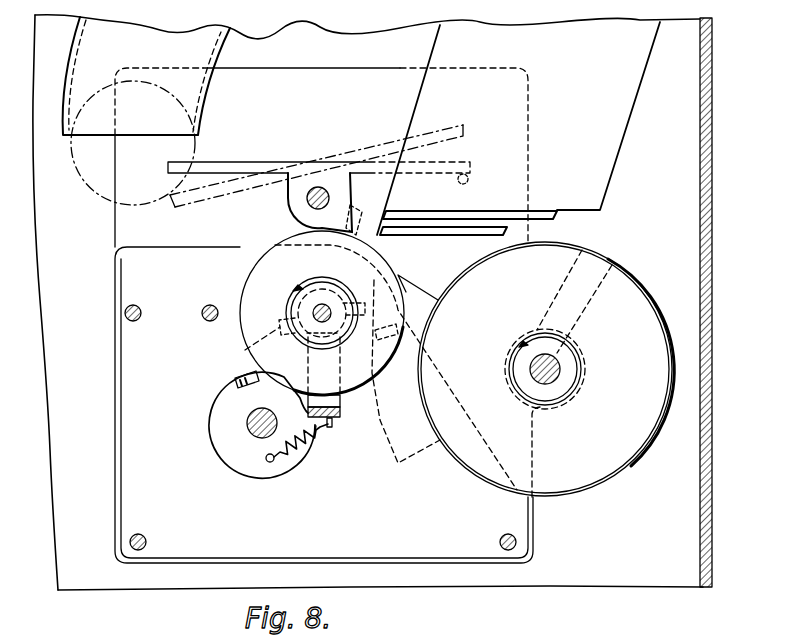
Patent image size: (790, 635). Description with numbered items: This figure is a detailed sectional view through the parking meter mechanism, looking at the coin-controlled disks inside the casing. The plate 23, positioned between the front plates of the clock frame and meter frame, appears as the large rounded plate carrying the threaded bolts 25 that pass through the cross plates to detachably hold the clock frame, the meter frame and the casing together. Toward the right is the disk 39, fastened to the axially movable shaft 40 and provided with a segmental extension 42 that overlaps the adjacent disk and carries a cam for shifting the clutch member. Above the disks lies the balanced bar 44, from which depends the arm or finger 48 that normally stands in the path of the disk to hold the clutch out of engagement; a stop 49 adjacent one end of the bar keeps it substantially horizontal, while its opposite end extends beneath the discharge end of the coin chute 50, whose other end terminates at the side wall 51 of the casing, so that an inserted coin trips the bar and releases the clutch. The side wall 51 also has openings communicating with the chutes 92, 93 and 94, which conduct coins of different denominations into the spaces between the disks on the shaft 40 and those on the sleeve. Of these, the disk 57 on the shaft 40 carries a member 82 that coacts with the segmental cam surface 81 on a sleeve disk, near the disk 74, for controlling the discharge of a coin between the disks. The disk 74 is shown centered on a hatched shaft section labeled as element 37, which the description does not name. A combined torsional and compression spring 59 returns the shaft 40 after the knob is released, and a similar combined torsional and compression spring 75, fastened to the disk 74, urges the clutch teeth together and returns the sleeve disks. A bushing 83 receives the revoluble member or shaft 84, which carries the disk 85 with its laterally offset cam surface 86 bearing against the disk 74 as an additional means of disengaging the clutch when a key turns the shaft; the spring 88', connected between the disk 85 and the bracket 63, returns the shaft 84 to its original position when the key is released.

The plate 23 is at (125, 262).
The threaded bolts 25 is at (126, 316).
The shaft 37 is at (321, 304).
The disk 39 is at (620, 271).
The axially movable shaft 40 is at (560, 372).
The segmental extension 42 is at (413, 288).
The balanced bar 44 is at (219, 164).
The arm or finger 48 is at (352, 214).
The stop 49 is at (468, 180).
The coin chute 50 is at (203, 46).
The side wall 51 is at (704, 172).
The disk 57 is at (629, 465).
The combined torsional and compression spring 59 is at (580, 357).
The bracket 63 is at (331, 428).
The disk 74 is at (262, 256).
The combined torsional and compression spring 75 is at (335, 292).
The segmental cam surface 81 is at (248, 349).
The member 82 is at (594, 287).
The bushing 83 is at (256, 438).
The revoluble member or shaft 84 is at (250, 432).
The disk 85 is at (263, 478).
The laterally offset cam surface 86 is at (249, 387).
The spring 88' is at (300, 451).
The chute 92 is at (510, 229).
The chute 93 is at (560, 216).
The chute 94 is at (604, 197).